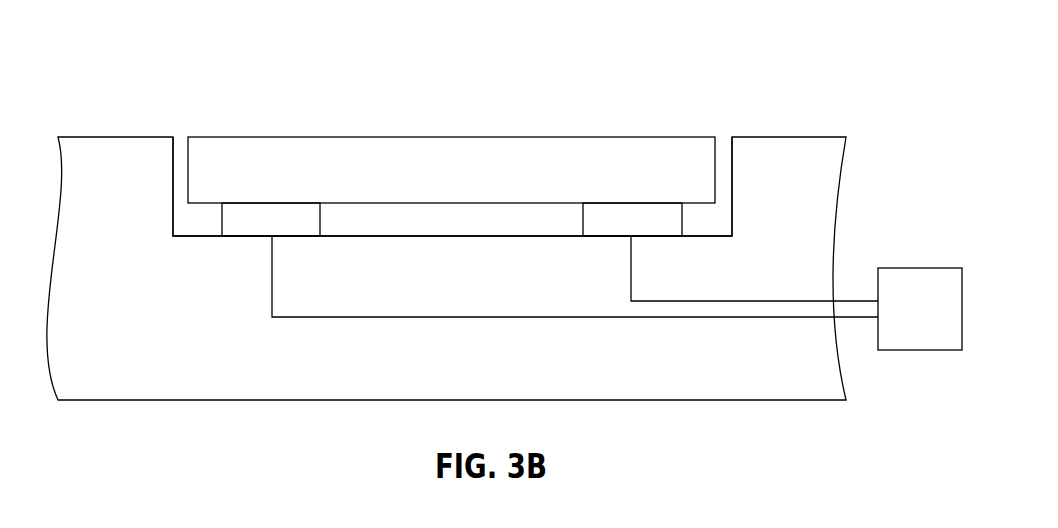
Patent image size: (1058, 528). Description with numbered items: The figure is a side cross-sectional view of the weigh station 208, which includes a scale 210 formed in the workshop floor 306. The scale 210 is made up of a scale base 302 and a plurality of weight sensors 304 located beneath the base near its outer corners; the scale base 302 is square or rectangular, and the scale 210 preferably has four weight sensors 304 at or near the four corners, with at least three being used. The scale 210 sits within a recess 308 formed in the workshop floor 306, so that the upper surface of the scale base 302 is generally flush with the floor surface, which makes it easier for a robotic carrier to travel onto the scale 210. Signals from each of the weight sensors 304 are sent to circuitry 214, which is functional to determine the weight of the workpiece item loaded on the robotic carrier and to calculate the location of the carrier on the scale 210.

The weigh station 208 is at (626, 80).
The scale 210 is at (477, 128).
The circuitry 214 is at (901, 319).
The scale base 302 is at (434, 180).
The weight sensors 304 is at (253, 228).
The workshop floor 306 is at (112, 137).
The recess 308 is at (173, 158).